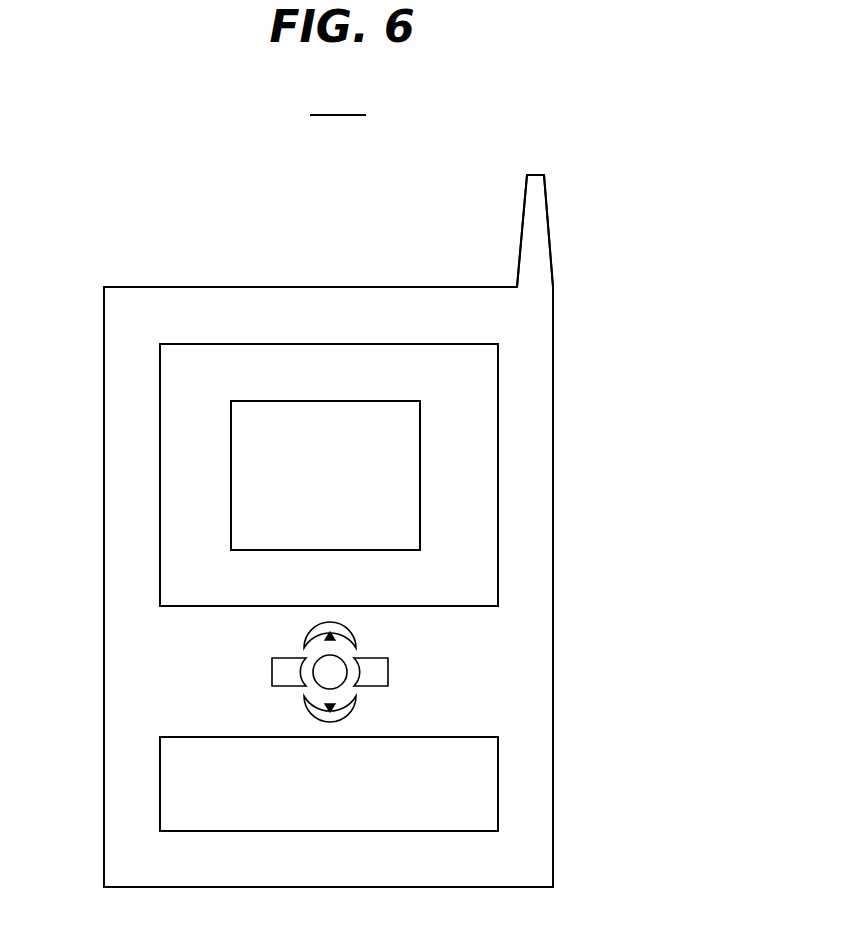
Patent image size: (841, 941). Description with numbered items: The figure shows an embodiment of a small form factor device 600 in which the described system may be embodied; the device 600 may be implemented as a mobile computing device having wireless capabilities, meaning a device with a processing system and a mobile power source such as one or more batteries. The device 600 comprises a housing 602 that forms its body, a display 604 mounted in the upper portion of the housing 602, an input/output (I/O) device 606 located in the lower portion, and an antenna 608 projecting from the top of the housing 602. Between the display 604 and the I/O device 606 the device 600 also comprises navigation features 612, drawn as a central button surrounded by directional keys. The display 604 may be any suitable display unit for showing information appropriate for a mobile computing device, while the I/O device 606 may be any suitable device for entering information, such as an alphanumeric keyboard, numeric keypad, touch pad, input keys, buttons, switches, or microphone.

The small form factor device 600 is at (338, 101).
The housing 602 is at (553, 622).
The display 604 is at (498, 406).
The input/output (I/O) device 606 is at (498, 790).
The antenna 608 is at (548, 220).
The navigation features 612 is at (394, 656).